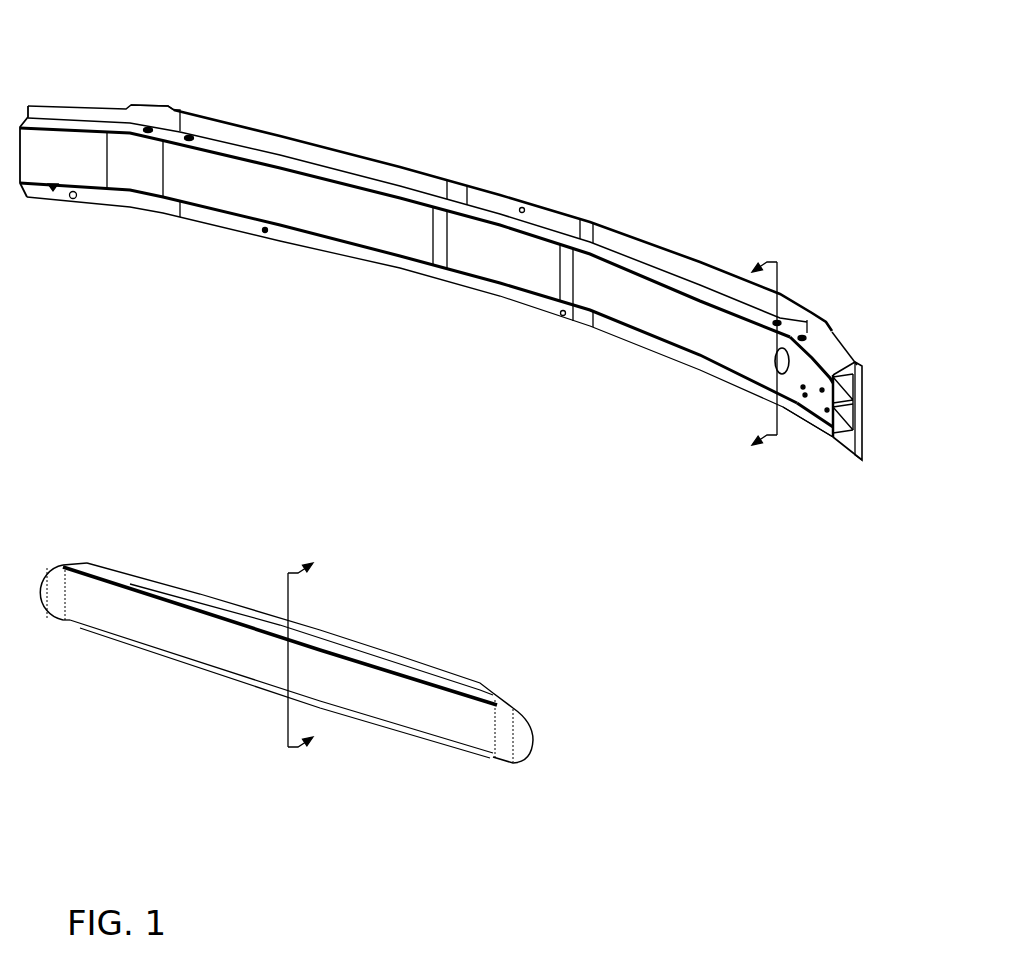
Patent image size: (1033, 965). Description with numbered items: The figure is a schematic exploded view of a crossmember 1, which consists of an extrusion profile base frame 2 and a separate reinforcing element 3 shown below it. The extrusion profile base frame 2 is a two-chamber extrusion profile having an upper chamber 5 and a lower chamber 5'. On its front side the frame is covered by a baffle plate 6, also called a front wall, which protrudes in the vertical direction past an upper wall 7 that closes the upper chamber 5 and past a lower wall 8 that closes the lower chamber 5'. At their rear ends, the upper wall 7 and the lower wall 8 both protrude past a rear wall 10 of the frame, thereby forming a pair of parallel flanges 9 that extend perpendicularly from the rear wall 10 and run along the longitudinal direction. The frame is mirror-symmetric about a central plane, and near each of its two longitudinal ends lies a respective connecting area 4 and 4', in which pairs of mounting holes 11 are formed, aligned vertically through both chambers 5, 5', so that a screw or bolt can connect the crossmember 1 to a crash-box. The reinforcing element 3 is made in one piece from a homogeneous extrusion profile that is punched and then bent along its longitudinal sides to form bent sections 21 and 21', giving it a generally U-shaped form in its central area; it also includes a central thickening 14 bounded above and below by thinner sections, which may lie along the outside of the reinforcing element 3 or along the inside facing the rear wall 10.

The crossmember 1 is at (35, 28).
The extrusion profile base frame 2 is at (539, 185).
The reinforcing element 3 is at (255, 703).
The connecting area 4 is at (820, 339).
The connecting area 4' is at (166, 88).
The upper chamber 5 is at (858, 379).
The lower chamber 5' is at (844, 468).
The baffle plate 6 is at (318, 146).
The upper wall 7 is at (580, 247).
The lower wall 8 is at (562, 315).
The flanges 9 is at (822, 413).
The rear wall 10 is at (485, 266).
The mounting holes 11 is at (148, 128).
The central thickening 14 is at (468, 730).
The bent section 21 is at (290, 629).
The bent section 21' is at (281, 706).